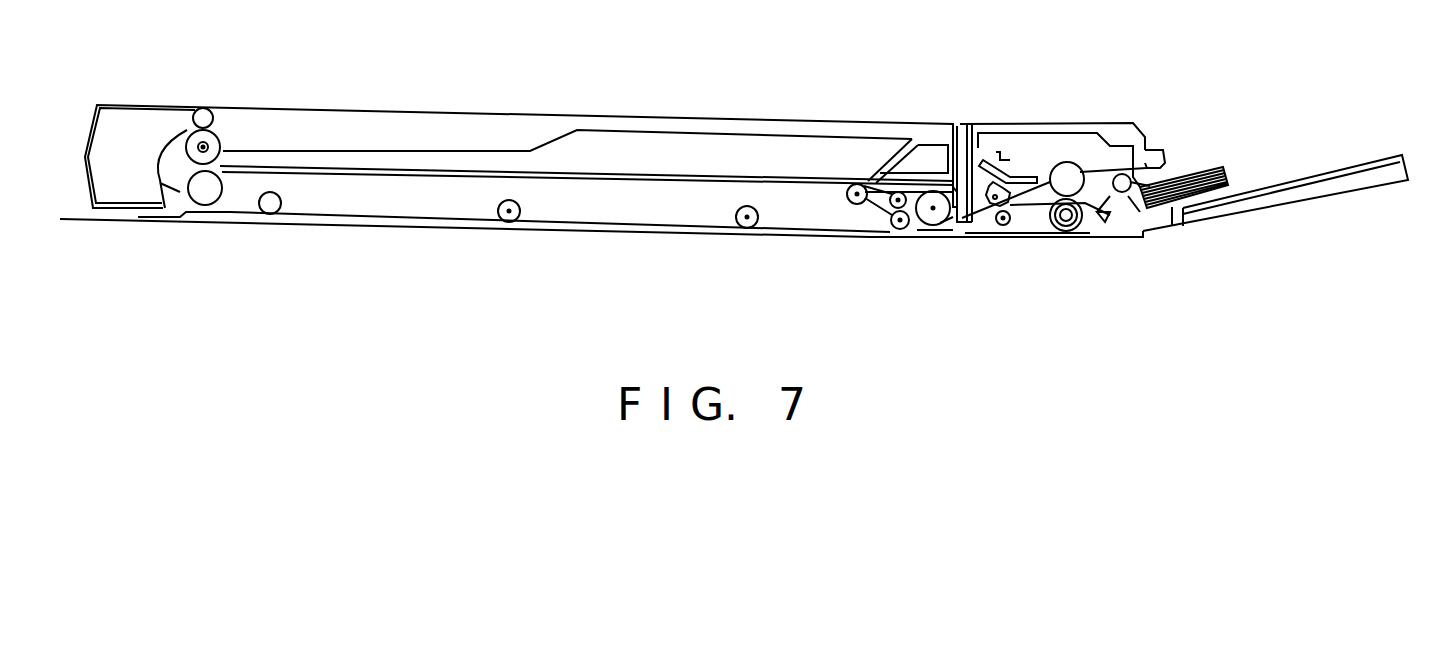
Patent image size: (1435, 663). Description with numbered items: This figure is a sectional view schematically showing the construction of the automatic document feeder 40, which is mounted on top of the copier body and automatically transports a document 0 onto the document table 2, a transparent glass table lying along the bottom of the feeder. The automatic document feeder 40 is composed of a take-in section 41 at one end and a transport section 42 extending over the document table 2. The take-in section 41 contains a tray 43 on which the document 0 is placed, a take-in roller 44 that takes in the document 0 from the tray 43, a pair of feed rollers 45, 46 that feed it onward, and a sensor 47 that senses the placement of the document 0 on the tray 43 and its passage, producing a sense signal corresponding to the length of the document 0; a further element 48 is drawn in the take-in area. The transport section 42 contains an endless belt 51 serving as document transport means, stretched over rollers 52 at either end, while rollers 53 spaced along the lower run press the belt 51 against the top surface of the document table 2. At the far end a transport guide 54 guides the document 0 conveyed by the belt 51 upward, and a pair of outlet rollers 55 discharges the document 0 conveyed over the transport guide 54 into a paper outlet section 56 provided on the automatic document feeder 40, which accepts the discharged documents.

The document table 2 is at (678, 227).
The automatic document feeder 40 is at (648, 117).
The take-in section 41 is at (1010, 115).
The transport section 42 is at (792, 122).
The tray 43 is at (1283, 198).
The take-in roller 44 is at (1150, 235).
The feed roller 45 is at (1068, 162).
The feed roller 46 is at (1002, 227).
The sensor 47 is at (972, 123).
The stopper 48 is at (1163, 148).
The endless belt 51 is at (585, 226).
The roller 52 is at (205, 200).
The roller 53 is at (270, 214).
The transport guide 54 is at (148, 172).
The outlet rollers 55 is at (217, 134).
The paper outlet section 56 is at (447, 151).
The document 0 is at (388, 225).